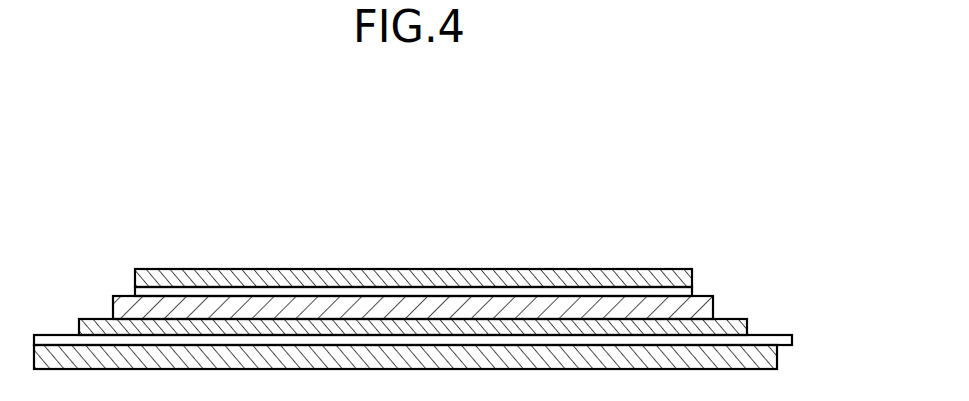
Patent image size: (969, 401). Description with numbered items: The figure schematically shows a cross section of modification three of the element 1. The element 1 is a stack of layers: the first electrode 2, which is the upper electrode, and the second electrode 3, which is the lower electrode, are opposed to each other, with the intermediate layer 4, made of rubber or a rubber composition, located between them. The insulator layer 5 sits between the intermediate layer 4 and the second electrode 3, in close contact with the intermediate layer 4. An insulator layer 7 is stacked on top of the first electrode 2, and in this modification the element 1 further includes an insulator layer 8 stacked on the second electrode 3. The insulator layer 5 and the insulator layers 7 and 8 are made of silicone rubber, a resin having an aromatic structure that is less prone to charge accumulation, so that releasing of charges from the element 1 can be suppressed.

The element 1 is at (643, 164).
The first electrode 2 is at (287, 293).
The second electrode 3 is at (413, 342).
The intermediate layer 4 is at (203, 312).
The insulator layer 5 is at (357, 327).
The insulator layer 7 is at (243, 278).
The insulator layer 8 is at (458, 362).